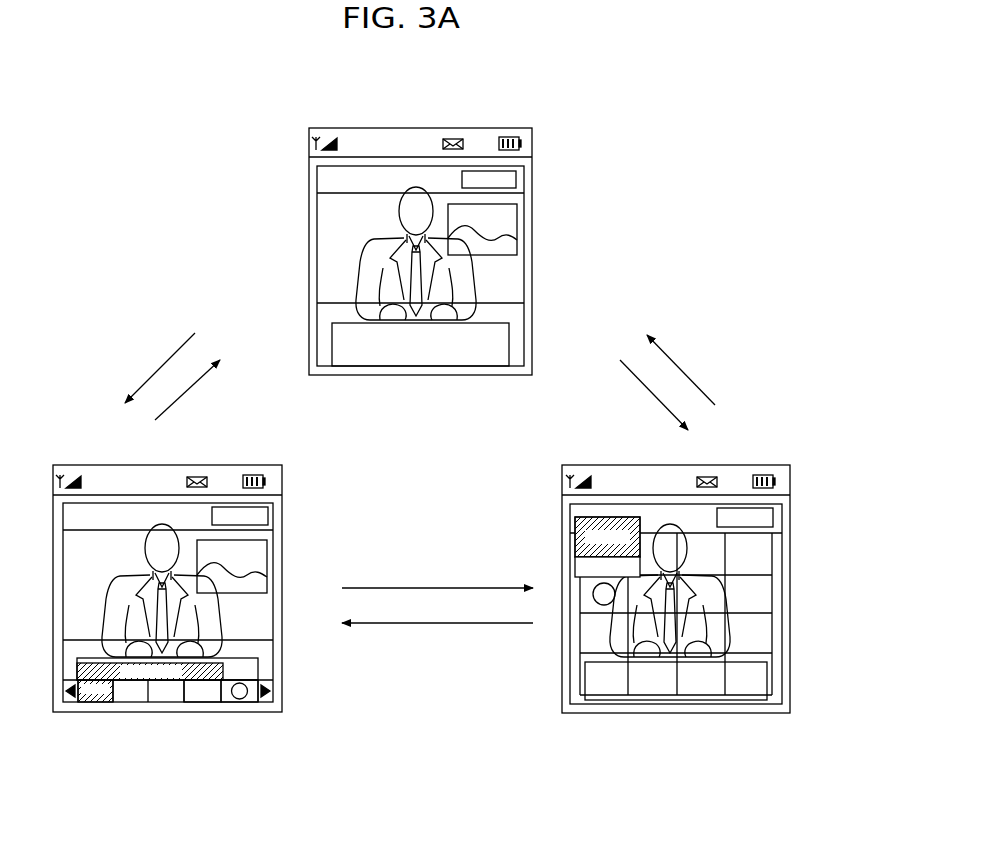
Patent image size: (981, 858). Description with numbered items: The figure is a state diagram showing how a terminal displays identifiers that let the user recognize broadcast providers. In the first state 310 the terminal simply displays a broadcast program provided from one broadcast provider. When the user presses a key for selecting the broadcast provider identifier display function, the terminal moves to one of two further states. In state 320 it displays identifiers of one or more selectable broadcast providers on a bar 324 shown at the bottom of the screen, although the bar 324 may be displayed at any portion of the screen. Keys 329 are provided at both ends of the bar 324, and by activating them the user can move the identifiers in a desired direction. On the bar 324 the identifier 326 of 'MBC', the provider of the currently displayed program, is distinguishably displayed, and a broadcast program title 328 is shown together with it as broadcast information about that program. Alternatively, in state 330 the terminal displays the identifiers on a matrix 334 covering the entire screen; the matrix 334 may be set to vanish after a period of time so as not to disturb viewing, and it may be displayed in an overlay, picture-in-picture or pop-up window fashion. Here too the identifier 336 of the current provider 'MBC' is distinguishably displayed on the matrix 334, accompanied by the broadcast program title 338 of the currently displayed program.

The broadcast program display state 310 is at (499, 117).
The bar identifier display state 320 is at (246, 455).
The matrix identifier display state 330 is at (755, 455).
The bar 324 is at (240, 702).
The identifier of current broadcast provider 326 is at (105, 702).
The broadcast program title 328 is at (205, 702).
The keys 329 is at (75, 702).
The matrix 334 is at (775, 628).
The identifier of current broadcast provider 336 is at (575, 535).
The broadcast program title 338 is at (575, 570).